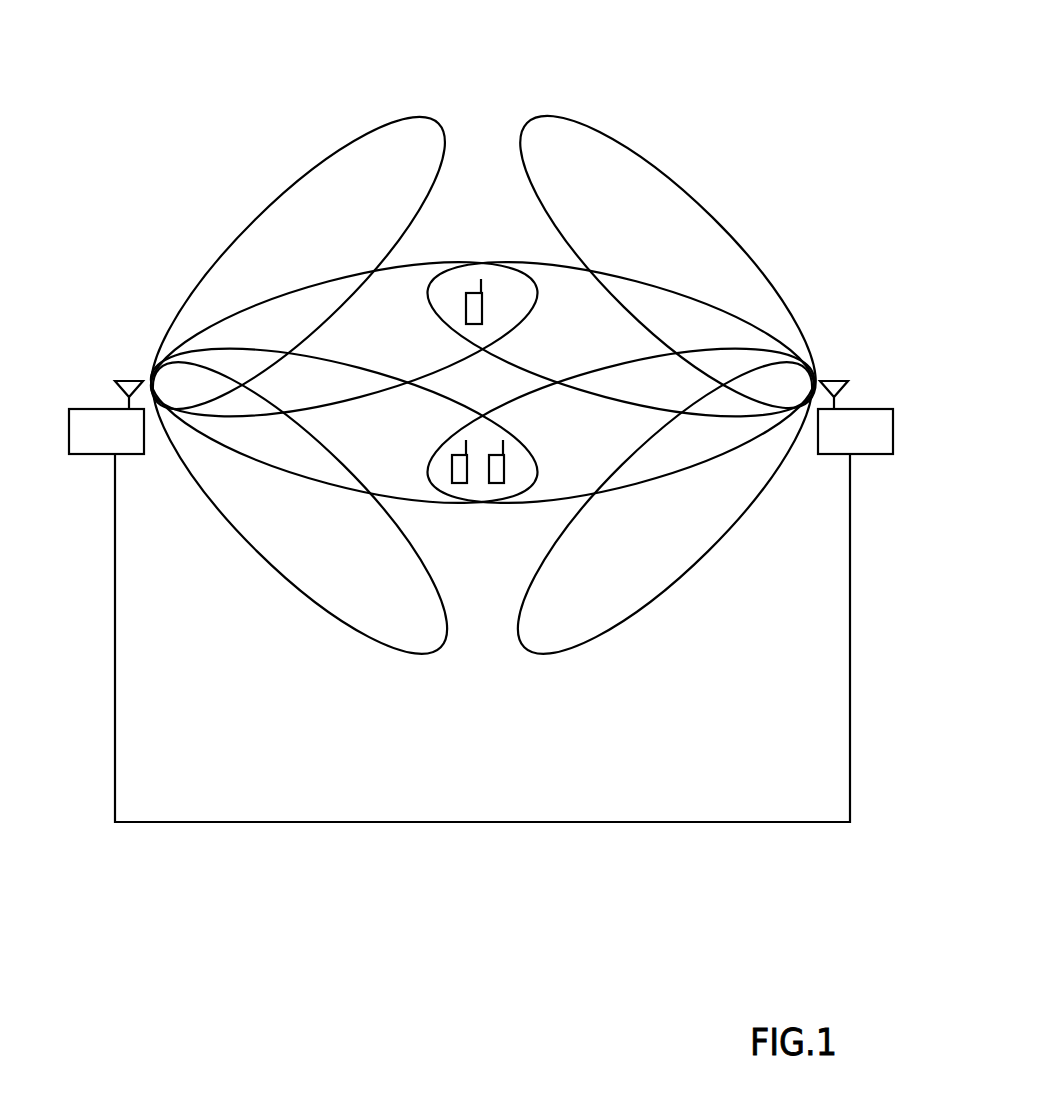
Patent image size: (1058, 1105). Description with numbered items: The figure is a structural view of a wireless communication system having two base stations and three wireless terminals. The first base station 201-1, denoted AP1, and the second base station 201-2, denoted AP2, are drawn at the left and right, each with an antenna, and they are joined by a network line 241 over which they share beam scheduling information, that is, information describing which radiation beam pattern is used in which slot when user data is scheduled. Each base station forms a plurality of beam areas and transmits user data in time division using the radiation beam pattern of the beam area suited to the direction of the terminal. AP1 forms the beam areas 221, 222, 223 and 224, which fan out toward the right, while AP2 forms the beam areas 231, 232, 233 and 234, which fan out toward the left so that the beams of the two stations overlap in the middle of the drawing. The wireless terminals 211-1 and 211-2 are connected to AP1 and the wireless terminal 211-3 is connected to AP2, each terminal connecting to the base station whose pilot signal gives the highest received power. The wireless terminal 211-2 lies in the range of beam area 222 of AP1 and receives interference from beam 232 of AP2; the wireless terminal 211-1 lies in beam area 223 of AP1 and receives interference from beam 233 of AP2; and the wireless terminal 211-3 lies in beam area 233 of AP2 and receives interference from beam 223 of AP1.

The first base station 201-1 is at (83, 455).
The second base station 201-2 is at (873, 453).
The wireless terminal 211-1 is at (463, 483).
The wireless terminal 211-2 is at (468, 292).
The wireless terminal 211-3 is at (497, 483).
The beam area 221 is at (360, 135).
The beam area 222 is at (406, 268).
The beam area 223 is at (402, 497).
The beam area 224 is at (365, 637).
The beam area 231 is at (600, 135).
The beam area 232 is at (575, 268).
The beam area 233 is at (567, 497).
The beam area 234 is at (600, 640).
The network line 241 is at (757, 823).